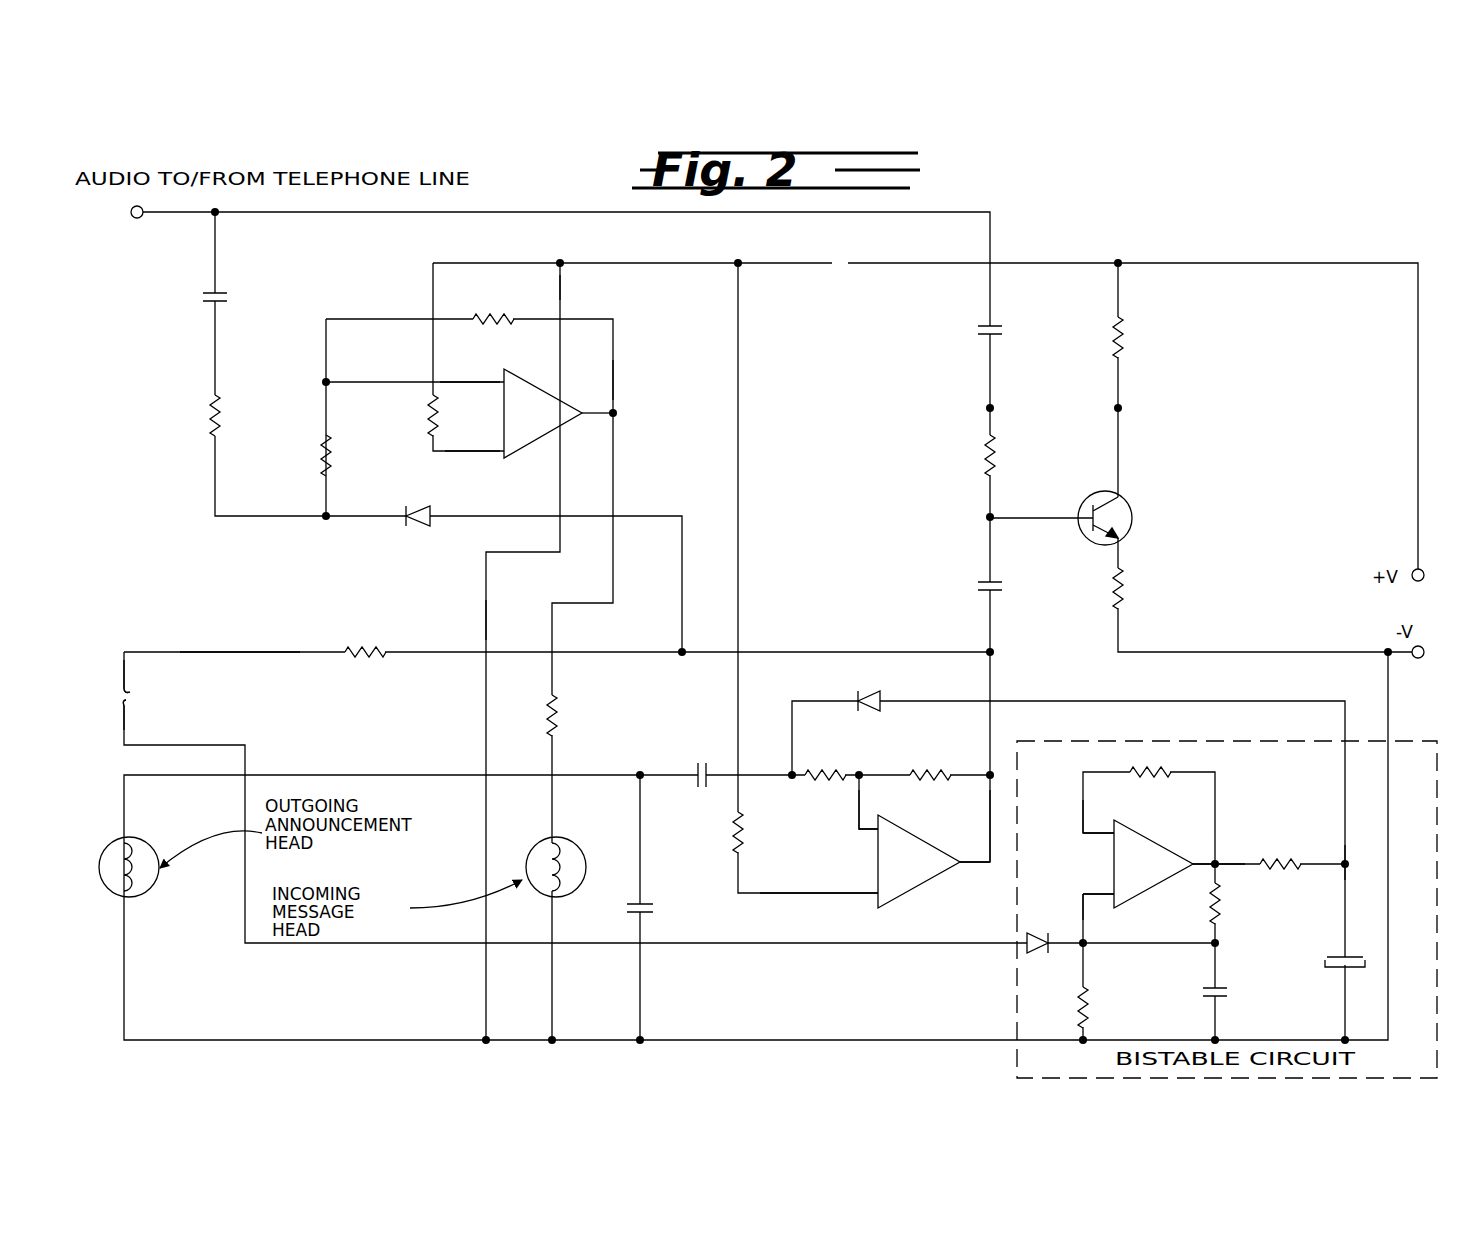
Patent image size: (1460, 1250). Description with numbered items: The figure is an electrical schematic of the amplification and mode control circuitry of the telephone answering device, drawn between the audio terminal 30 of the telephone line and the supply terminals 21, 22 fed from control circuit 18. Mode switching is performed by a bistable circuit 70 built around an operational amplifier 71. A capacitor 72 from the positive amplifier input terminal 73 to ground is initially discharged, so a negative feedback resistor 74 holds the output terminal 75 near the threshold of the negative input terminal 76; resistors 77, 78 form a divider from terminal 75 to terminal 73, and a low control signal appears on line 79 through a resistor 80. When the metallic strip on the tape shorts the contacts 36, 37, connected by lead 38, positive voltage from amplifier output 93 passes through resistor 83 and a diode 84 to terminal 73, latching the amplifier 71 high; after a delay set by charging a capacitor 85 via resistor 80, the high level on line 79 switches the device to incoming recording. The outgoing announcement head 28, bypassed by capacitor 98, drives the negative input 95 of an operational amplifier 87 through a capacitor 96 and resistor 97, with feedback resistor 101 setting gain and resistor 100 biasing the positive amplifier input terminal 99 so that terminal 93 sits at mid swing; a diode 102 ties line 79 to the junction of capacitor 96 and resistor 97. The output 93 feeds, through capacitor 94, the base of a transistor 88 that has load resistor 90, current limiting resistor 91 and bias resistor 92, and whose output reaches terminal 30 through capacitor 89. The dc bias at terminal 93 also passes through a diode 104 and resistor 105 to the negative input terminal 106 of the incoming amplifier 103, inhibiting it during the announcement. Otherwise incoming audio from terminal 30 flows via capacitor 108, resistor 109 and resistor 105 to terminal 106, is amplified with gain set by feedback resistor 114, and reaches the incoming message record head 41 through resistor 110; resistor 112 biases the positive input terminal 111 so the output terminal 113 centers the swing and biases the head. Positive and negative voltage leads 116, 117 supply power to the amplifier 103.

The audio terminal 30 is at (137, 218).
The capacitor 108 is at (200, 298).
The resistor 109 is at (210, 425).
The resistor 105 is at (322, 457).
The resistor 112 is at (428, 417).
The negative feedback resistor 114 is at (490, 317).
The positive voltage lead 116 is at (562, 287).
The negative input terminal 106 is at (468, 380).
The amplifier output terminal 113 is at (615, 375).
The incoming amplifier 103 is at (545, 426).
The positive input terminal 111 is at (490, 454).
The diode 104 is at (418, 528).
The resistor 83 is at (369, 647).
The electrical lead 38 is at (230, 650).
The electrical contact 36 is at (118, 681).
The electrical contact 37 is at (123, 706).
The negative voltage lead 117 is at (484, 625).
The resistor 110 is at (556, 718).
The outgoing announcement head 28 is at (150, 852).
The incoming message record head 41 is at (573, 845).
The capacitor 96 is at (702, 762).
The resistor 97 is at (822, 770).
The negative feedback resistor 101 is at (930, 769).
The diode 102 is at (870, 699).
The negative input 95 is at (858, 810).
The amplifier output terminal 93 is at (988, 812).
The positive amplifier input terminal 99 is at (843, 870).
The resistor 100 is at (736, 836).
The bypass capacitor 98 is at (656, 912).
The operational amplifier 87 is at (925, 876).
The capacitor 89 is at (975, 332).
The resistor 92 is at (984, 455).
The capacitor 94 is at (977, 586).
The transistor 88 is at (1086, 509).
The load resistor 90 is at (1128, 338).
The current limiting resistor 91 is at (1128, 590).
The +v terminal 21 is at (1412, 571).
The terminal 22 is at (1418, 658).
The control circuit 18 is at (1357, 602).
The bistable circuit 70 is at (1413, 1071).
The negative feedback resistor 74 is at (1149, 768).
The negative input terminal 76 is at (1083, 810).
The positive amplifier input terminal 73 is at (1083, 906).
The output terminal 75 is at (1228, 862).
The line 79 is at (1343, 836).
The resistor 80 is at (1282, 874).
The resistor 77 is at (1210, 912).
The operational amplifier 71 is at (1160, 876).
The diode 84 is at (1041, 954).
The resistor 78 is at (1090, 1012).
The capacitor 72 is at (1228, 992).
The capacitor 85 is at (1332, 968).